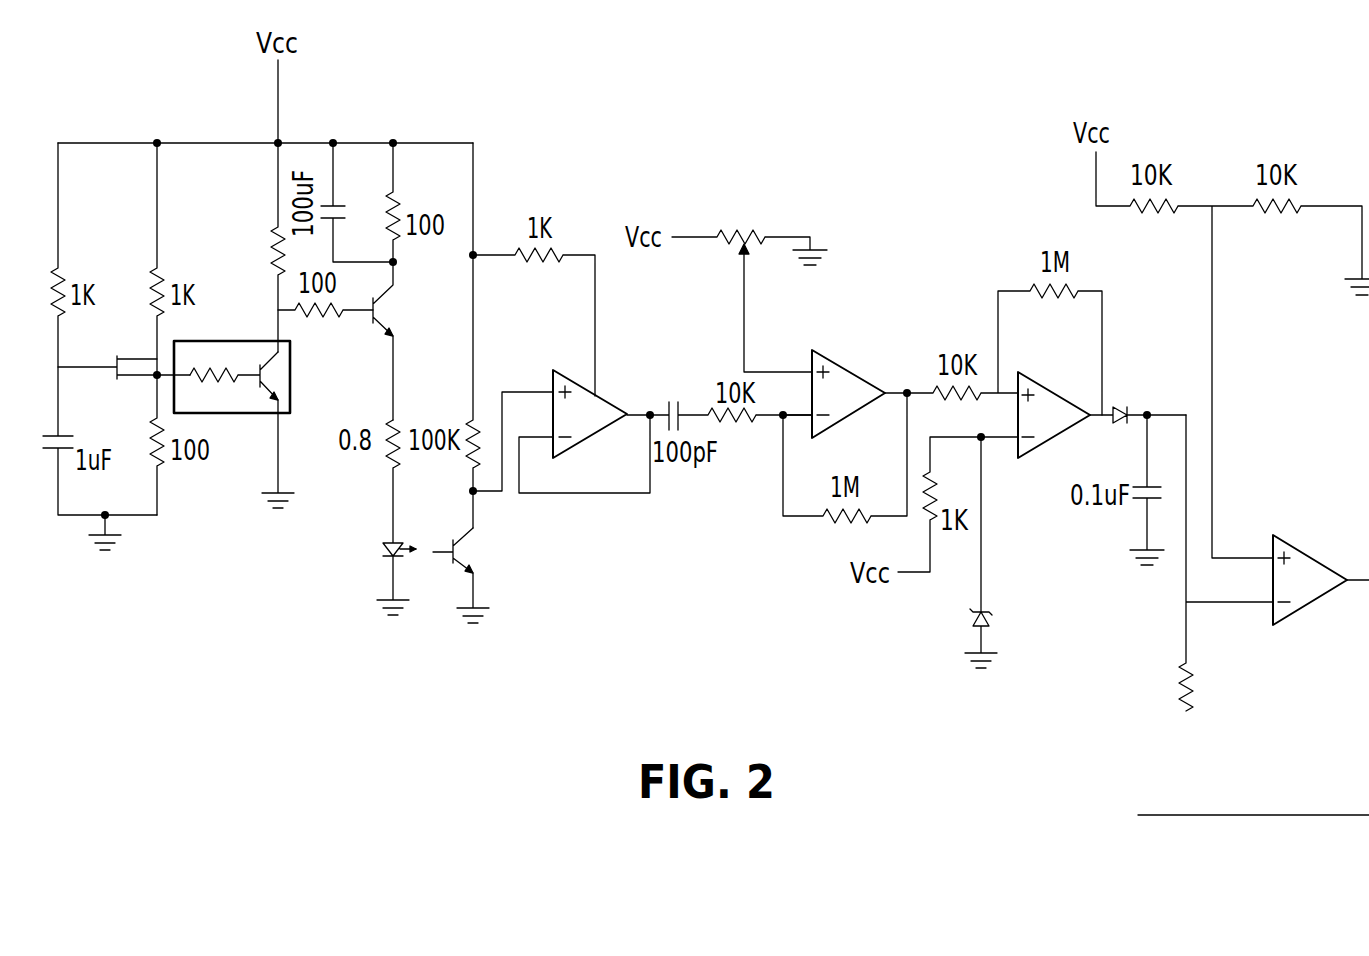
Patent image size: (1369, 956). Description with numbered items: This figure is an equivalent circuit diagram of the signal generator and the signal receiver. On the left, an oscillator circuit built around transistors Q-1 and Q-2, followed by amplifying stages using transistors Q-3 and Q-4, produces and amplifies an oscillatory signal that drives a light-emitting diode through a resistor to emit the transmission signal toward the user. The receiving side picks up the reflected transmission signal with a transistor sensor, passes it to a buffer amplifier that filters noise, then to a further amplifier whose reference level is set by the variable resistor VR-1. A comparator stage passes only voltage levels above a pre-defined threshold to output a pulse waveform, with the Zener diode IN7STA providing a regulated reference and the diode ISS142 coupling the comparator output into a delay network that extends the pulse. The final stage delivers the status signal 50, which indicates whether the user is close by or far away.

The status signal 50 is at (1285, 815).
The transistor Q-1 is at (124, 345).
The transistor Q-2 is at (257, 424).
The transistor Q-3 is at (411, 341).
The transistor Q-4 is at (481, 575).
The variable resistor VR-1 is at (749, 279).
The zener diode IN7STA is at (1022, 552).
The diode ISS142 is at (1138, 396).